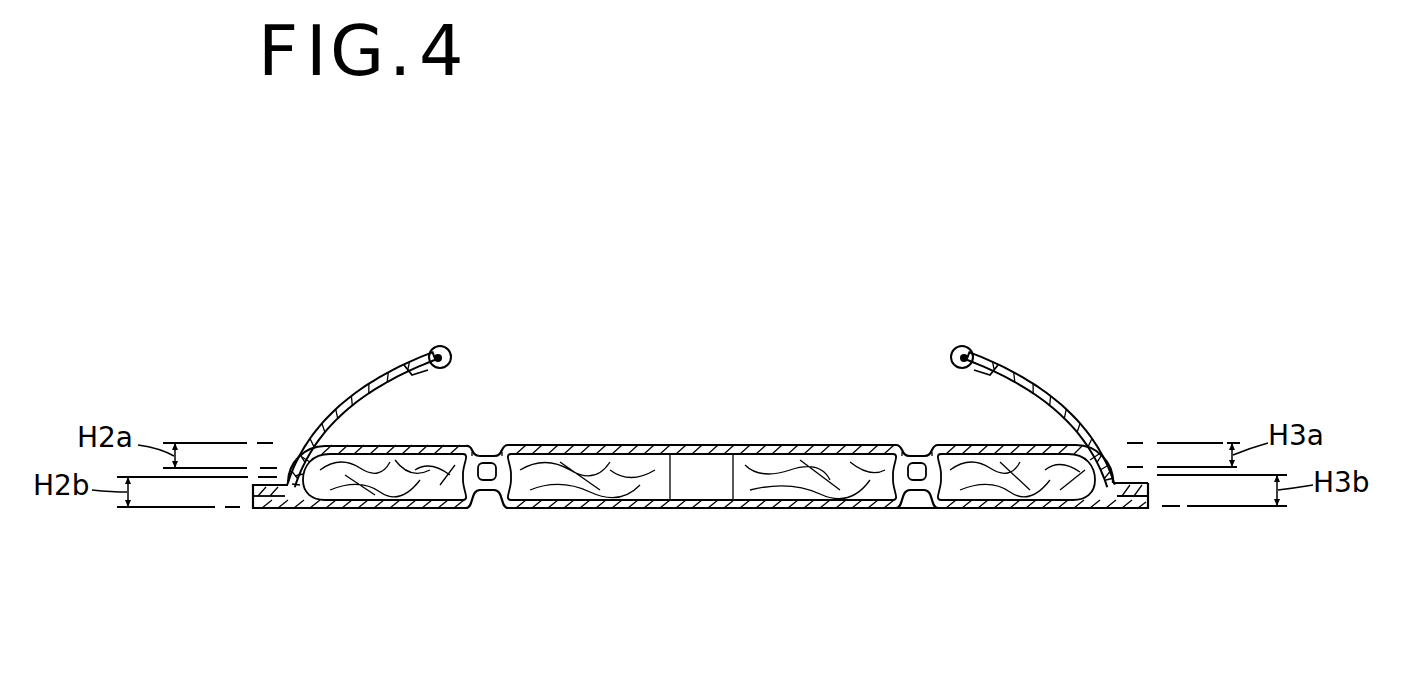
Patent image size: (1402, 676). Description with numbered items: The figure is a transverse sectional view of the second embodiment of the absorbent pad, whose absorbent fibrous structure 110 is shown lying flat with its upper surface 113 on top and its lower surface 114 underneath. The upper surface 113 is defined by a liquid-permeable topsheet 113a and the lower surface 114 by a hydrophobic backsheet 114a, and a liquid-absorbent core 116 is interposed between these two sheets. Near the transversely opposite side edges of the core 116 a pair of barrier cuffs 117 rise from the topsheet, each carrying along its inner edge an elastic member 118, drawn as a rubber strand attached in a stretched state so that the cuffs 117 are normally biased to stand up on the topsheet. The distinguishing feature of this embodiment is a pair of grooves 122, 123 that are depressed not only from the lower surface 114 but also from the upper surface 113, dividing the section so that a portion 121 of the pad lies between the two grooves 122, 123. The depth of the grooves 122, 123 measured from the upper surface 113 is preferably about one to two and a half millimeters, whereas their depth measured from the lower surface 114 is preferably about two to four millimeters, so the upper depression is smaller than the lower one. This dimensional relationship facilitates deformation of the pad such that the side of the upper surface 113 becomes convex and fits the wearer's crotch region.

The absorbent fibrous structure 110 is at (852, 160).
The upper surface 113 is at (800, 444).
The liquid-permeable topsheet 113a is at (1128, 500).
The lower surface 114 is at (775, 509).
The hydrophobic backsheet 114a is at (1142, 508).
The liquid-absorbent core 116 is at (328, 485).
The barrier cuff 117 is at (350, 396).
The elastic member 118 is at (437, 352).
The central portion 121 is at (687, 457).
The groove 122 is at (485, 450).
The groove 123 is at (917, 450).